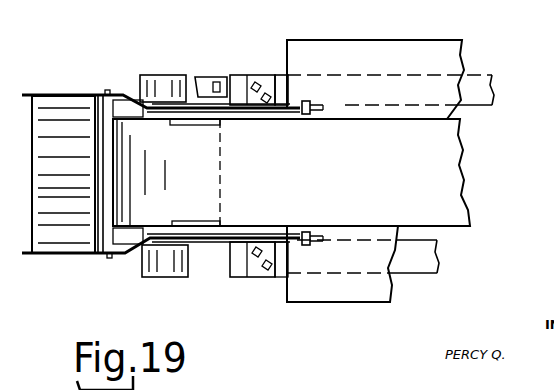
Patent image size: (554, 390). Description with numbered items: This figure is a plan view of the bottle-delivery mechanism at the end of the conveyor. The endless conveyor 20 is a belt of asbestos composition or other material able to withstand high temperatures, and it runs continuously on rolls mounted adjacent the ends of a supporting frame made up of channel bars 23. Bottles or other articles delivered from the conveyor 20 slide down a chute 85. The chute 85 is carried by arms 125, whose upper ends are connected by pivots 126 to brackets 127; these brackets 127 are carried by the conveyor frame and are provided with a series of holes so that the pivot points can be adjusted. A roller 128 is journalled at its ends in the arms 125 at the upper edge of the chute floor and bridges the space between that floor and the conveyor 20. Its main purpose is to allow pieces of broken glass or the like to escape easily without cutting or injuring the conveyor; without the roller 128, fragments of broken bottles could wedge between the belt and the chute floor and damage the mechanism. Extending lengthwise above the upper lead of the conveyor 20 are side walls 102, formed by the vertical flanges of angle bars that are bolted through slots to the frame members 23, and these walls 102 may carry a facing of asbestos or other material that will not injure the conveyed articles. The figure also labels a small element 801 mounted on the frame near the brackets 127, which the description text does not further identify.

The endless conveyor 20 is at (452, 170).
The channel bars 23 is at (480, 83).
The chute 85 is at (60, 115).
The side walls 102 is at (417, 47).
The arms 125 is at (82, 92).
The pivots 126 is at (303, 103).
The brackets 127 is at (290, 108).
The roller 128 is at (110, 240).
The block 801 is at (208, 80).